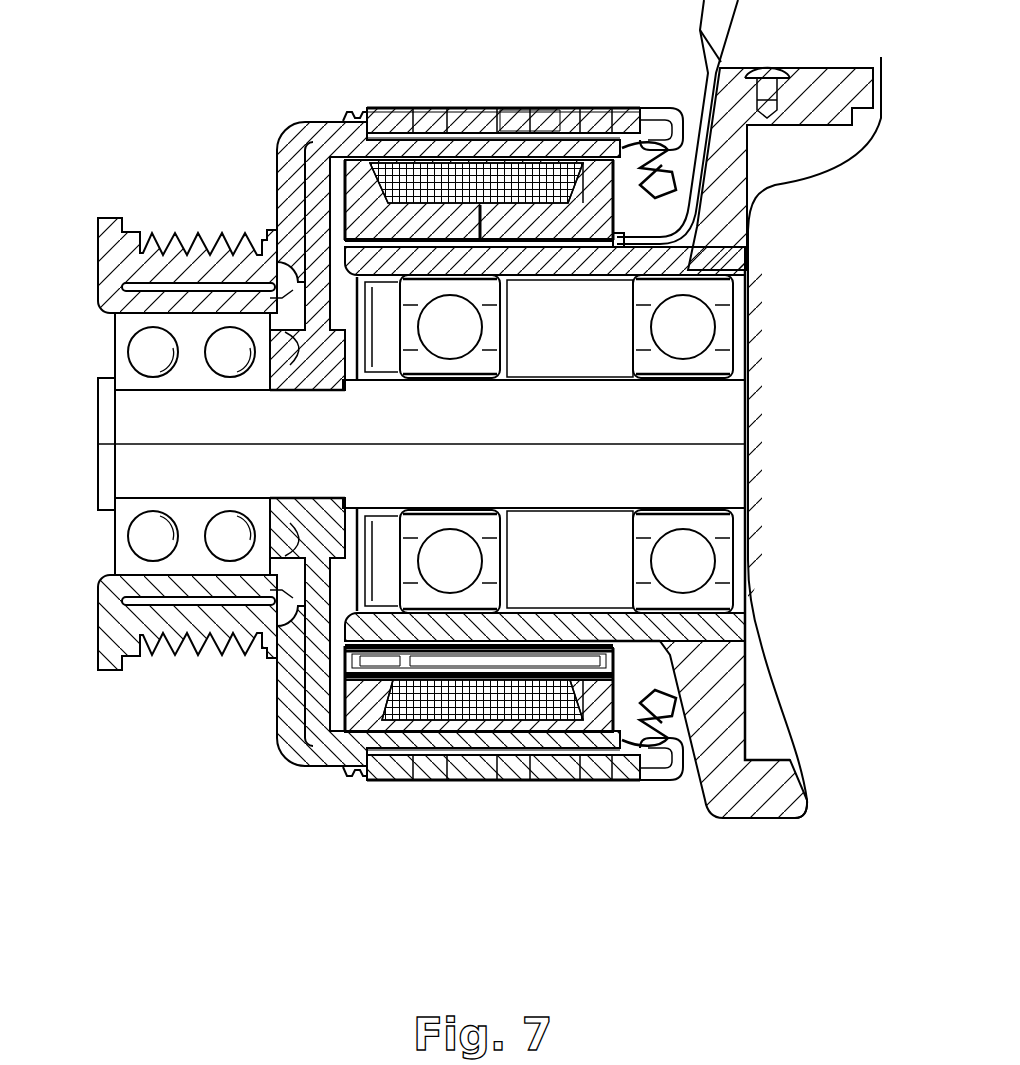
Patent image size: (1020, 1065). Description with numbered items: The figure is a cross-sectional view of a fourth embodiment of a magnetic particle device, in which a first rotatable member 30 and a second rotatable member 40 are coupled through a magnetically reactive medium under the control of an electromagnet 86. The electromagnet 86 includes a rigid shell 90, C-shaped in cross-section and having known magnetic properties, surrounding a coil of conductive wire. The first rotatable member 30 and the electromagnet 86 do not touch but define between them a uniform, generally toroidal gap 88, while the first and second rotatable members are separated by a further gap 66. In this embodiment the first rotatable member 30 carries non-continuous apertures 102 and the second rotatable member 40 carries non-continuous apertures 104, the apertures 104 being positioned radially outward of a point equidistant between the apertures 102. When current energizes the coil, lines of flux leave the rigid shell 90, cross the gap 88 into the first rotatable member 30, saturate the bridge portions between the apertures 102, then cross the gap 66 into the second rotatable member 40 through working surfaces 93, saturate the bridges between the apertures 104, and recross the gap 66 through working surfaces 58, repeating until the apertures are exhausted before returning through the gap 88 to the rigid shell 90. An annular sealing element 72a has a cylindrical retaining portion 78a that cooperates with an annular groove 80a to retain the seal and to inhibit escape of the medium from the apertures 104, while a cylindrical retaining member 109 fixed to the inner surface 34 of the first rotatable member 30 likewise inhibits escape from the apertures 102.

The first rotatable member 30 is at (295, 400).
The inner surface 34 is at (330, 717).
The second rotatable member 40 is at (107, 208).
The working surfaces 58 is at (413, 118).
The gap 66 is at (313, 147).
The annular sealing element 72a is at (660, 120).
The cylindrical retaining portion 78a is at (522, 118).
The annular groove 80a is at (340, 118).
The electromagnet 86 is at (632, 206).
The gap 88 is at (664, 166).
The rigid shell 90 is at (336, 206).
The working surfaces 93 is at (378, 118).
The apertures 102 is at (388, 742).
The apertures 104 is at (445, 752).
The cylindrical retaining member 109 is at (545, 732).